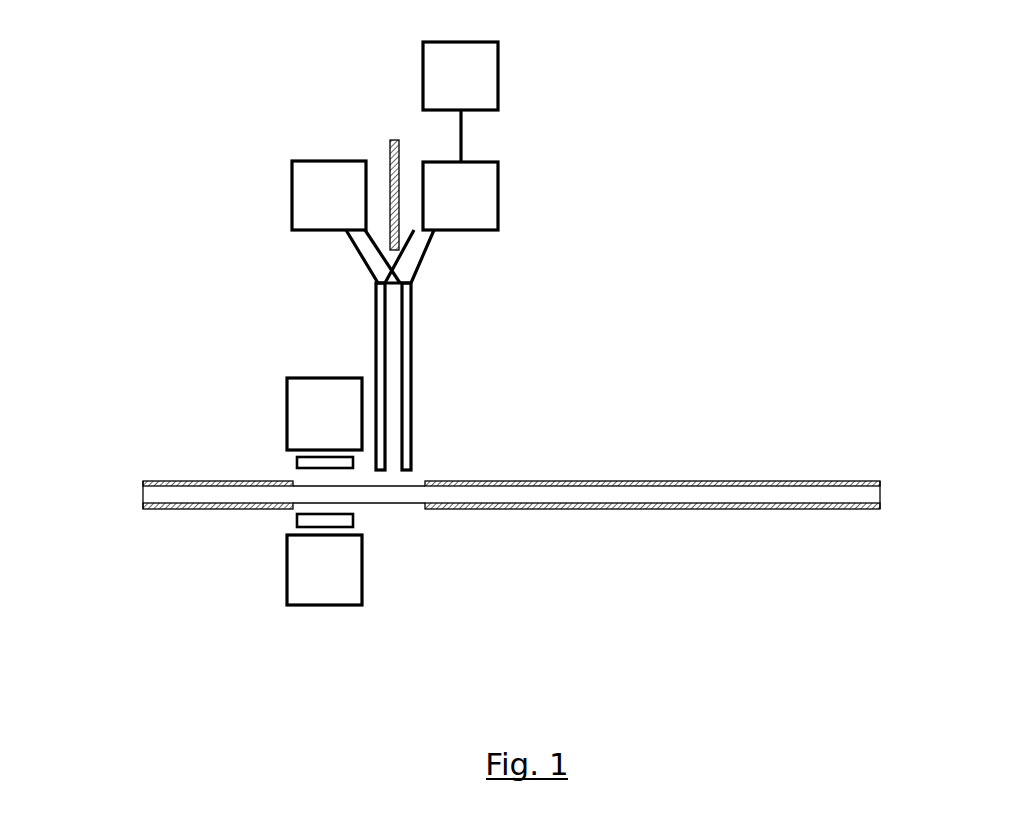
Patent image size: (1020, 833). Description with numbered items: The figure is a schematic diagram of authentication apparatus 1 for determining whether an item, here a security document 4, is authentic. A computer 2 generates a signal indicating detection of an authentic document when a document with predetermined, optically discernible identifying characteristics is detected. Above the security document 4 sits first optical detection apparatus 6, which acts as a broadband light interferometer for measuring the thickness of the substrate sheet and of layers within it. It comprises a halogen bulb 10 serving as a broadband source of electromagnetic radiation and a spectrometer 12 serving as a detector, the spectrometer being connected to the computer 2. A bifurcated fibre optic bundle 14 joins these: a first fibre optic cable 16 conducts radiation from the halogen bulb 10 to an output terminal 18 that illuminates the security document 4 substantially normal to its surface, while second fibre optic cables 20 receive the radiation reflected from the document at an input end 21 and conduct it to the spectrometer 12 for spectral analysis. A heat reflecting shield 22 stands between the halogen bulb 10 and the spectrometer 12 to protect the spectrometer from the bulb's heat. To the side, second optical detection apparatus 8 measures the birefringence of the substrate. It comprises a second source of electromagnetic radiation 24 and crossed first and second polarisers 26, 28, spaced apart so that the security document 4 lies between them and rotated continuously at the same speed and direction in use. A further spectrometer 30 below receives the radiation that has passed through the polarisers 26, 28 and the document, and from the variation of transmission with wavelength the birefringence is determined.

The authentication apparatus 1 is at (155, 137).
The computer 2 is at (488, 83).
The security document 4 is at (622, 492).
The first optical detection apparatus 6 is at (512, 281).
The second optical detection apparatus 8 is at (267, 408).
The halogen bulb 10 is at (317, 175).
The spectrometer 12 is at (478, 185).
The bifurcated fibre optic bundle 14 is at (413, 387).
The first fibre optic cable 16 is at (393, 328).
The output terminal 18 is at (398, 470).
The second fibre optic cables 20 is at (382, 360).
The input end 21 is at (380, 470).
The heat reflecting shield 22 is at (388, 167).
The second source of electromagnetic radiation 24 is at (312, 398).
The first polariser 26 is at (310, 462).
The second polariser 28 is at (322, 519).
The further spectrometer 30 is at (322, 578).